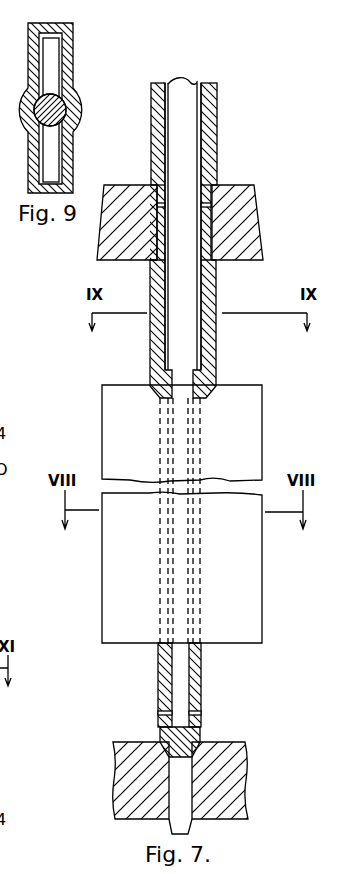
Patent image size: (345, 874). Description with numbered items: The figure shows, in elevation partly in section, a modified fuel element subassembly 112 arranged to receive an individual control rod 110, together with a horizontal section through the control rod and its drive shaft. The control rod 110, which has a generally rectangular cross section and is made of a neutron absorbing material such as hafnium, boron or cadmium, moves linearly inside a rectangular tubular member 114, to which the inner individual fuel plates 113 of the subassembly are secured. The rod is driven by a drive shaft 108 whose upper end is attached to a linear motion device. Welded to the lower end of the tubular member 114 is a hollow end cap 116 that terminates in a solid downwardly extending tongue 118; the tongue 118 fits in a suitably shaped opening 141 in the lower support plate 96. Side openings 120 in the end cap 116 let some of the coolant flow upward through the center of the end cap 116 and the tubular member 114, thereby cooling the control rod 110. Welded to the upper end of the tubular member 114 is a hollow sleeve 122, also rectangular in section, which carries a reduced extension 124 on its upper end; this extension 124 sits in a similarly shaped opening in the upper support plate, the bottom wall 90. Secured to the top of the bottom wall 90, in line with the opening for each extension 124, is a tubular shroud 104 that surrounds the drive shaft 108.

In FIG. 7, the bottom wall 90 is at (228, 192).
In FIG. 7, the lower support plate 96 is at (237, 755).
In FIG. 7, the tubular shroud 104 is at (226, 133).
In FIG. 9, the drive shaft 108 is at (61, 108).
In FIG. 7, the drive shaft 108 is at (192, 310).
In FIG. 9, the control rod 110 is at (51, 159).
In FIG. 7, the control rod 110 is at (182, 427).
In FIG. 7, the fuel element subassembly 112 is at (268, 565).
In FIG. 7, the fuel plate 113 is at (252, 396).
In FIG. 7, the tubular member 114 is at (197, 478).
In FIG. 7, the end cap 116 is at (197, 687).
In FIG. 7, the tongue 118 is at (186, 768).
In FIG. 7, the side opening 120 is at (198, 716).
In FIG. 9, the hollow sleeve 122 is at (65, 72).
In FIG. 7, the hollow sleeve 122 is at (214, 339).
In FIG. 7, the reduced extension 124 is at (209, 246).
In FIG. 7, the opening 141 is at (168, 757).